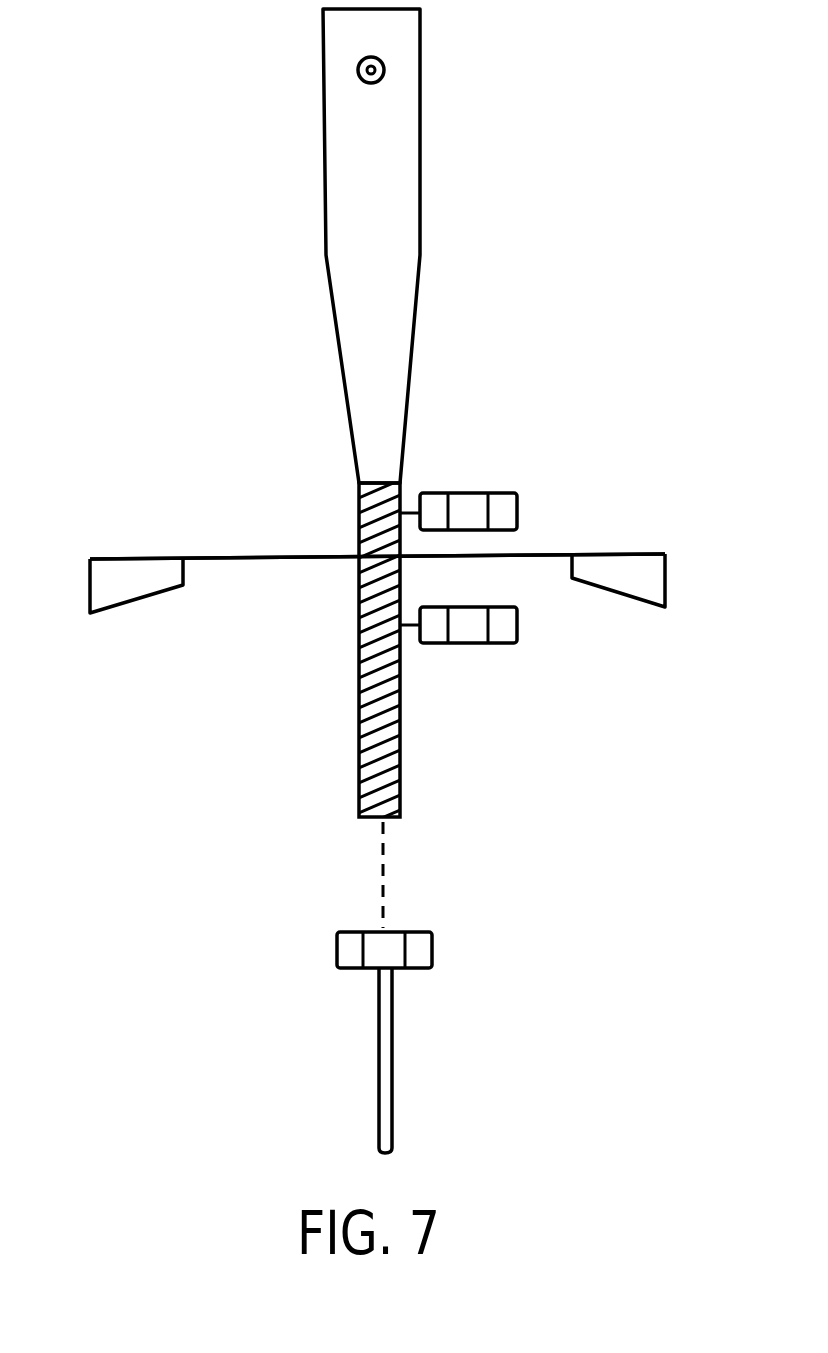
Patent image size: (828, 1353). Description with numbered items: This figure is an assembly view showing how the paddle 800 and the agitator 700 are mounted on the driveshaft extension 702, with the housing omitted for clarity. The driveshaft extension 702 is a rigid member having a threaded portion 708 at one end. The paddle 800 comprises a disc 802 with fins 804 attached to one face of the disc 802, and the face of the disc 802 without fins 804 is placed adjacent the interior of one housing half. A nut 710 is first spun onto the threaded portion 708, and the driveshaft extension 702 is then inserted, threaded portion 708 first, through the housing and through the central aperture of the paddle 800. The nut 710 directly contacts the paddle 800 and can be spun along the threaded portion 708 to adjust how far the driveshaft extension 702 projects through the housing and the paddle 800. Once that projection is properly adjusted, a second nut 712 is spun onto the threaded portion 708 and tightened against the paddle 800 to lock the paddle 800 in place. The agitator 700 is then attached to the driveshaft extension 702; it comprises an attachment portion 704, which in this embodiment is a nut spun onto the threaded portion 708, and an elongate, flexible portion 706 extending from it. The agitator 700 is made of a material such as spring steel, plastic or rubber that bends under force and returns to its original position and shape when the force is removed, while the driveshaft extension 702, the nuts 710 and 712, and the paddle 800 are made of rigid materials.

The agitator 700 is at (207, 1016).
The driveshaft extension 702 is at (232, 200).
The attachment portion 704 is at (432, 955).
The elongate, flexible portion 706 is at (393, 1122).
The threaded portion 708 is at (328, 733).
The nut 710 is at (517, 493).
The nut 712 is at (517, 643).
The paddle 800 is at (132, 497).
The disc 802 is at (247, 557).
The fins 804 is at (132, 600).